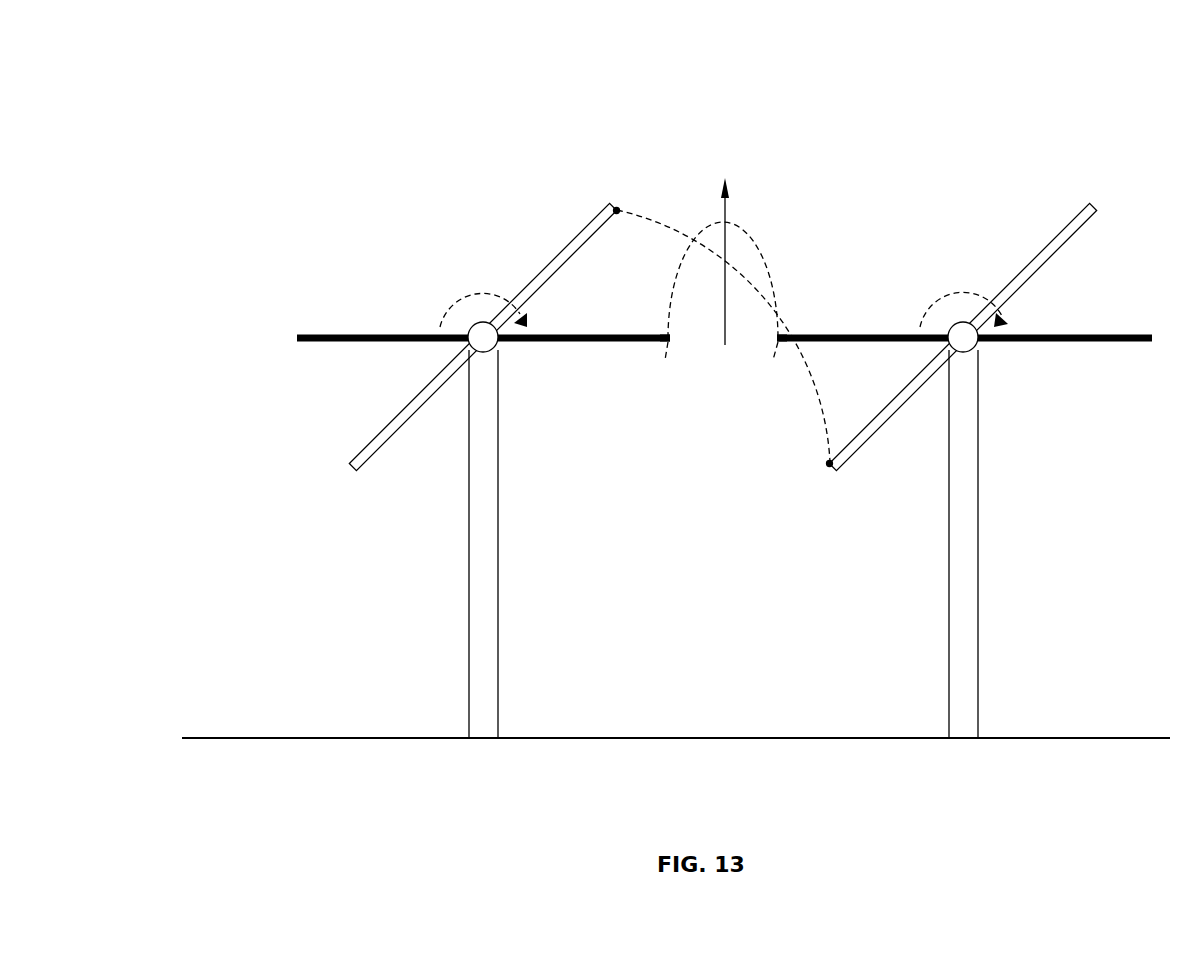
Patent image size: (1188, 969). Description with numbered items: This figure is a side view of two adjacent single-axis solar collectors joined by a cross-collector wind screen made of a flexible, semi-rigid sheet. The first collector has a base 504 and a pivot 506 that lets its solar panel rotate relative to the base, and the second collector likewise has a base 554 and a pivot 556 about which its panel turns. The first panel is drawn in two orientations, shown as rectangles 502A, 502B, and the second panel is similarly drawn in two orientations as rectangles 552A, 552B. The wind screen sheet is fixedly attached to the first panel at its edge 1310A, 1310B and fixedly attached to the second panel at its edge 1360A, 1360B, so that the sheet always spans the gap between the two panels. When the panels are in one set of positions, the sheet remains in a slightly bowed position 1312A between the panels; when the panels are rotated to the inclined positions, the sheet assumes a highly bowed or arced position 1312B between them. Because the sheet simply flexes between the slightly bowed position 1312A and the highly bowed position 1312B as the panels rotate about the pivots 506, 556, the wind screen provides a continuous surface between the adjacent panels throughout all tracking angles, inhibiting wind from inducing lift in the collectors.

The first solar panel in inclined position 502A is at (383, 427).
The first solar panel in inclined position 502B is at (340, 335).
The base 504 is at (468, 603).
The pivot 506 is at (472, 327).
The second solar panel in inclined position 552A is at (1030, 262).
The second solar panel in inclined position 552B is at (1052, 334).
The base 554 is at (950, 685).
The pivot 556 is at (972, 347).
The edge of first panel 1310A is at (619, 206).
The edge of first panel 1310B is at (669, 342).
The slightly bowed position of sheet 1312A is at (660, 225).
The highly bowed position of sheet 1312B is at (752, 237).
The edge of second panel 1360A is at (829, 466).
The edge of second panel 1360B is at (777, 343).